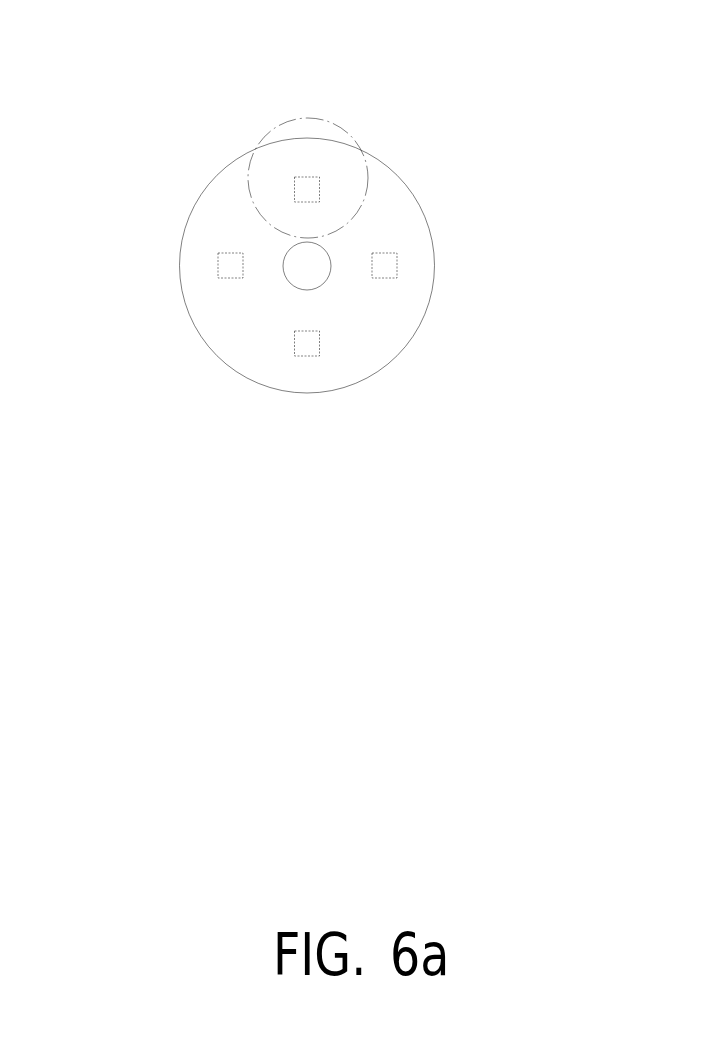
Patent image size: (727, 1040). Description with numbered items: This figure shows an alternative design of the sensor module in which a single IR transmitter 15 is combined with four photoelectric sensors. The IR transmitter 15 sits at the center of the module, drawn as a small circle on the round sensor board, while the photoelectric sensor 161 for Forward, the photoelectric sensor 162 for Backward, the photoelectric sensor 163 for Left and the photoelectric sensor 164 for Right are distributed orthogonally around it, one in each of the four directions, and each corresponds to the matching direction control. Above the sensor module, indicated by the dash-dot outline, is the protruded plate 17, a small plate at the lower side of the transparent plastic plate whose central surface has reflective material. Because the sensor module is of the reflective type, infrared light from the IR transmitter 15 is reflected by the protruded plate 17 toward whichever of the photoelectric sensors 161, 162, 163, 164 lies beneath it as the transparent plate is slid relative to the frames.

The IR transmitter 15 is at (304, 265).
The protruded plate 17 is at (313, 134).
The photoelectric sensor - Forward 161 is at (307, 188).
The photoelectric sensor - Backward 162 is at (308, 348).
The photoelectric sensor - Left 163 is at (223, 265).
The photoelectric sensor - Right 164 is at (394, 270).